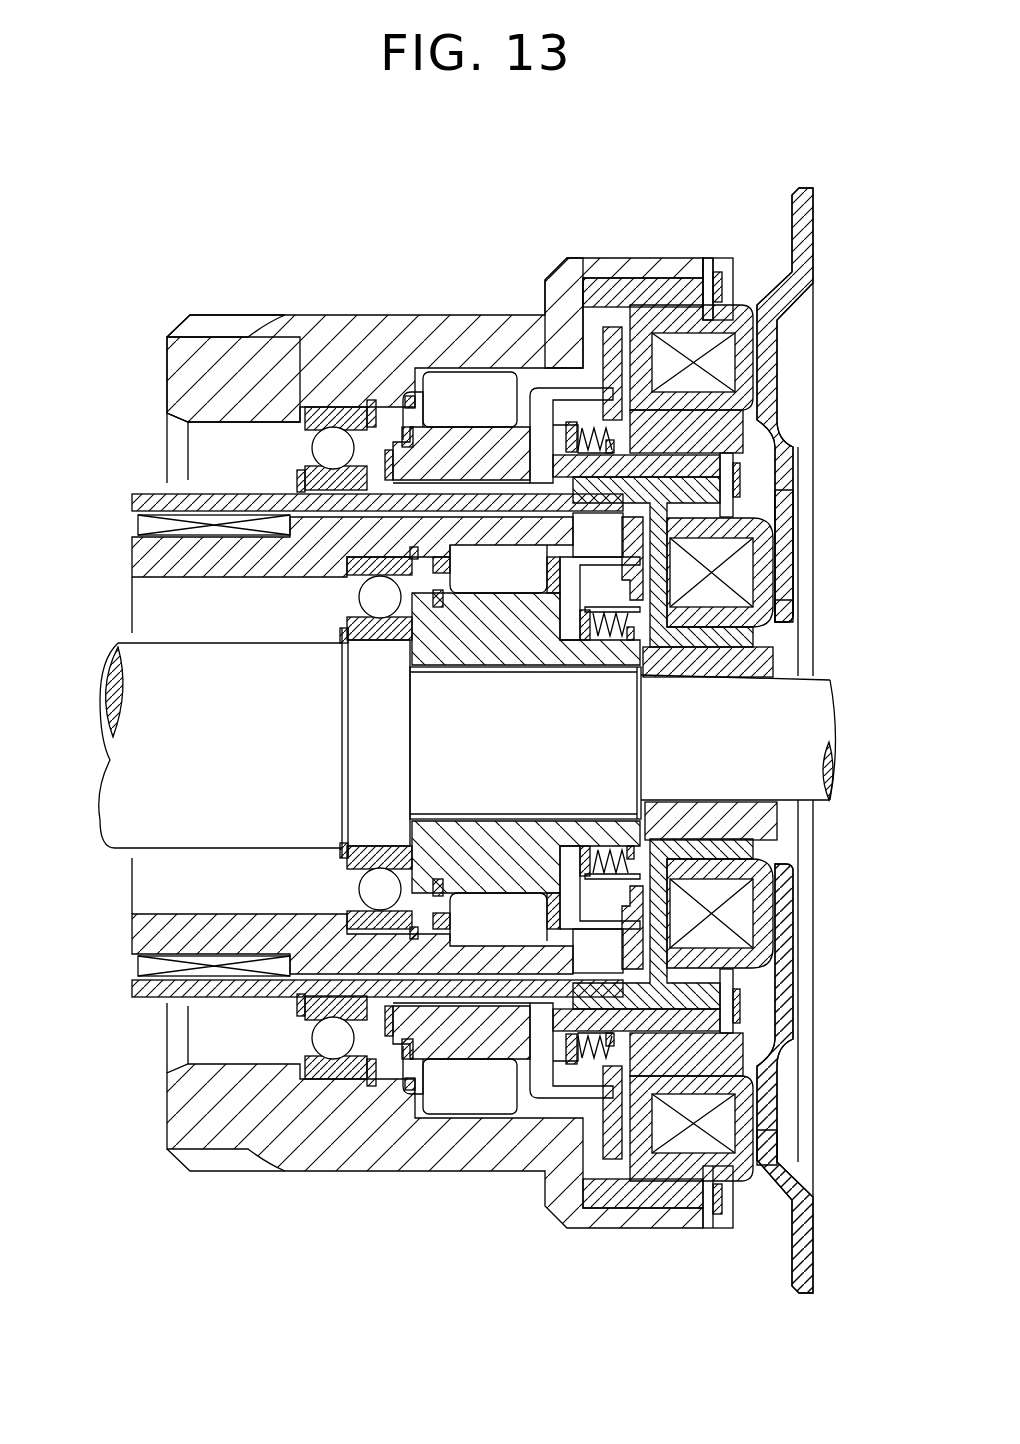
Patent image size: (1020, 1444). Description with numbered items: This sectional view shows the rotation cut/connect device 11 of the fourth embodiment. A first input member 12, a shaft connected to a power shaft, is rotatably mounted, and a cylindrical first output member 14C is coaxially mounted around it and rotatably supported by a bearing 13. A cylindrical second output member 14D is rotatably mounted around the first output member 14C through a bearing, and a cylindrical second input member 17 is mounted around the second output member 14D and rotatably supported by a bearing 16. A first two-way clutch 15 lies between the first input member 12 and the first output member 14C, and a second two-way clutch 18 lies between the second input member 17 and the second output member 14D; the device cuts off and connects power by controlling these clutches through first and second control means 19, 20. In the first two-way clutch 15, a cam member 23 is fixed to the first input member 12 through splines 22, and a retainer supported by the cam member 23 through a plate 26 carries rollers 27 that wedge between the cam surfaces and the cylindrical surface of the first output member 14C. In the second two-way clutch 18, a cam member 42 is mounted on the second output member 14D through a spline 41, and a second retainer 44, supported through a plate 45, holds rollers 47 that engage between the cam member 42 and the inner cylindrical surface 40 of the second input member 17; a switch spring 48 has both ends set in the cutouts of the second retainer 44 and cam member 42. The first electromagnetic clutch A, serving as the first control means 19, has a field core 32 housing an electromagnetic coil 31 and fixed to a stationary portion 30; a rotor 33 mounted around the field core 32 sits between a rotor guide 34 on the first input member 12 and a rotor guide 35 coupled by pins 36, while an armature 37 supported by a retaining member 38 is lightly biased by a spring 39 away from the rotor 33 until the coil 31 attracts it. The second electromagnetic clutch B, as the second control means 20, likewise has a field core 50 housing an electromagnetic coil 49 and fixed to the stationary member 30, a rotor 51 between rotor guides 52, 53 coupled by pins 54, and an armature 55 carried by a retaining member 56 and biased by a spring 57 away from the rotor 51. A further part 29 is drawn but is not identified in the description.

The rotation cut/connect device 11 is at (322, 313).
The first input member 12 is at (122, 760).
The bearing 13 is at (375, 597).
The first output member 14C is at (172, 570).
The second output member 14D is at (138, 492).
The first two-way clutch 15 is at (370, 876).
The bearing 16 is at (325, 438).
The second input member 17 is at (182, 380).
The second two-way clutch 18 is at (475, 1118).
The first control means 19 is at (788, 573).
The second control means 20 is at (760, 362).
The splines 22 is at (425, 790).
The cam member 23 is at (468, 842).
The plate 26 is at (455, 635).
The roller 27 is at (525, 862).
The lever 29 is at (565, 600).
The stationary portion 30 is at (803, 252).
The electromagnetic coil 31 is at (712, 555).
The field core 32 is at (712, 492).
The rotor 33 is at (776, 692).
The rotor guide 34 is at (770, 815).
The rotor guide 35 is at (748, 1005).
The pins 36 is at (742, 956).
The armature 37 is at (715, 465).
The retaining member 38 is at (690, 880).
The spring 39 is at (610, 632).
The cylindrical surface 40 is at (445, 1118).
The spline 41 is at (378, 1110).
The cam member 42 is at (415, 1110).
The second retainer 44 is at (407, 395).
The plate 45 is at (388, 395).
The roller 47 is at (505, 1098).
The switch spring 48 is at (540, 390).
The electromagnetic coil 49 is at (736, 310).
The field core 50 is at (680, 325).
The rotor 51 is at (664, 335).
The rotor guide 52 is at (612, 290).
The rotor guide 53 is at (740, 430).
The pins 54 is at (738, 280).
The armature 55 is at (588, 290).
The retaining member 56 is at (566, 390).
The spring 57 is at (508, 412).
The first electromagnetic clutch A is at (788, 620).
The second electromagnetic clutch B is at (746, 1165).